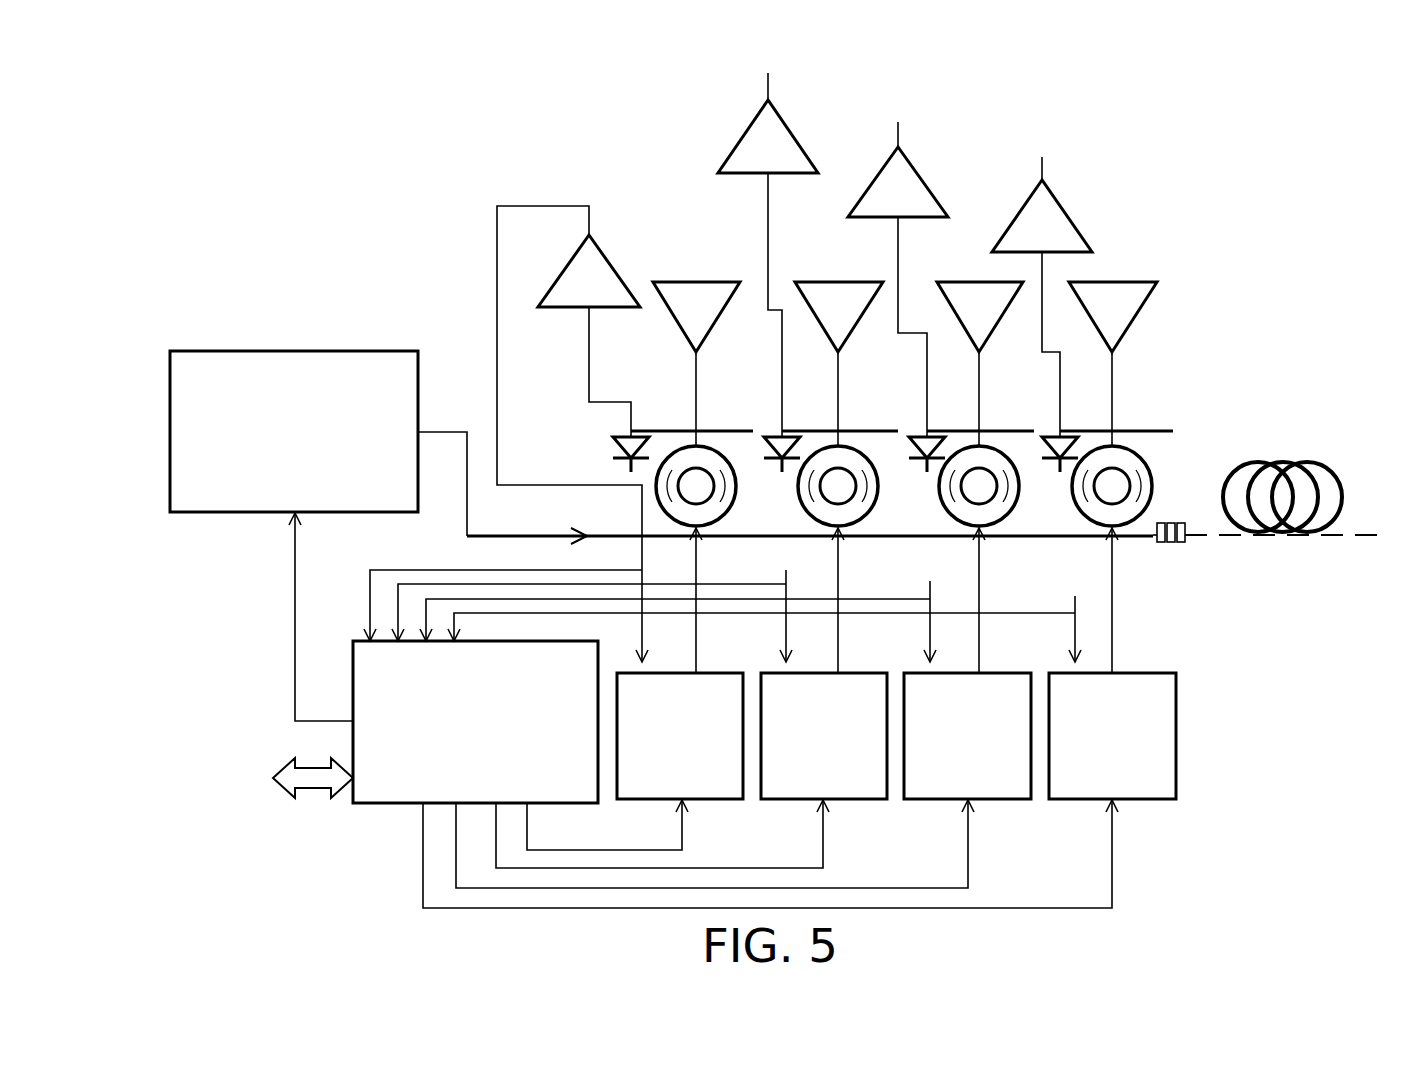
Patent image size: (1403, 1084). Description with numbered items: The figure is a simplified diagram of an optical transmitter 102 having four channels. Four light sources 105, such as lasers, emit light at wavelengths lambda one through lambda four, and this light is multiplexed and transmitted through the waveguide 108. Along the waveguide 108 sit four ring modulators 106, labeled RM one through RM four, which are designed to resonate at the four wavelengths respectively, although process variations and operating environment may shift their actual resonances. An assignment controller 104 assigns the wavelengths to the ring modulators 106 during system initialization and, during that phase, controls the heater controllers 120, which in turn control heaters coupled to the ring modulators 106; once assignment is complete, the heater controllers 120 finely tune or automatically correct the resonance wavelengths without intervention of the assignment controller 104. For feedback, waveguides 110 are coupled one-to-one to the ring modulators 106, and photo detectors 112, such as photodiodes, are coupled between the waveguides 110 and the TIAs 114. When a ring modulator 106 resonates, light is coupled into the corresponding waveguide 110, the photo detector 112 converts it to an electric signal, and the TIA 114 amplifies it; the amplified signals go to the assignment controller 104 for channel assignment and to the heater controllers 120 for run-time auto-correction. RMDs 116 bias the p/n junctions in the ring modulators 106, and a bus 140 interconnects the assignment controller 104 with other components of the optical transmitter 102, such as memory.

The optical transmitter 102 is at (176, 196).
The assignment controller 104 is at (385, 805).
The light sources 105 is at (294, 350).
The ring modulators 106 is at (719, 514).
The waveguide 108 is at (610, 533).
The waveguides 110 is at (660, 428).
The photo detectors 112 is at (612, 424).
The TIAs 114 is at (611, 262).
The RMDs 116 is at (716, 314).
The heater controllers 120 is at (720, 802).
The bus 140 is at (315, 790).